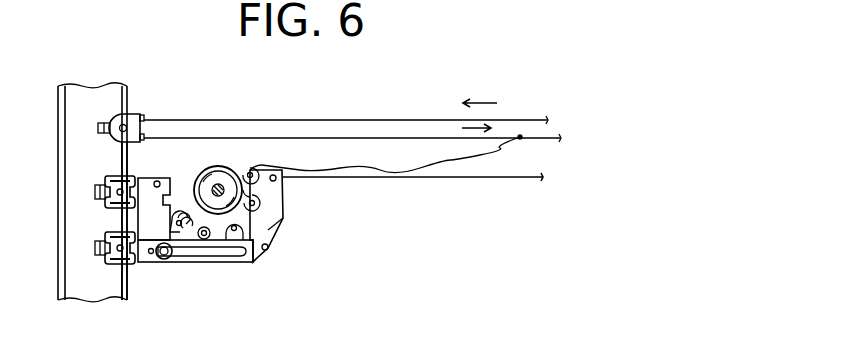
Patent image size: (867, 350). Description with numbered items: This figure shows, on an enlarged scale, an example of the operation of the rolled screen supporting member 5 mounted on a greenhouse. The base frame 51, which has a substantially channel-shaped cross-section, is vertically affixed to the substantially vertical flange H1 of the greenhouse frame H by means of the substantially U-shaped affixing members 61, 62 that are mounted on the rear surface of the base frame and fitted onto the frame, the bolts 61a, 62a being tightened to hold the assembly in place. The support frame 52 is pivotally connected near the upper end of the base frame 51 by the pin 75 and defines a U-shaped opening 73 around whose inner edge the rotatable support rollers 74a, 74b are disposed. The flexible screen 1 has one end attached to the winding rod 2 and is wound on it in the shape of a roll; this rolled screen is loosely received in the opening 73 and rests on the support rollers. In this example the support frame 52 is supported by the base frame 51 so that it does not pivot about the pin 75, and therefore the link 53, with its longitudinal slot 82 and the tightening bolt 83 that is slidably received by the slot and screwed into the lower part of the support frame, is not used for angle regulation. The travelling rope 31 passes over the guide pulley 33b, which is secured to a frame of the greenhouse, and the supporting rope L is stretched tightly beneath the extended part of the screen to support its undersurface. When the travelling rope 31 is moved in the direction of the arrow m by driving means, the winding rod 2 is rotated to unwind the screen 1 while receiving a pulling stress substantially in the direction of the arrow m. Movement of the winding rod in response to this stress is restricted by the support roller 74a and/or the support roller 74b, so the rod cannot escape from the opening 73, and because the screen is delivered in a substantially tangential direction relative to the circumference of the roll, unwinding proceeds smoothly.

The flexible screen 1 is at (395, 171).
The winding rod 2 is at (219, 184).
The rolled screen supporting member 5 is at (273, 272).
The travelling rope 31 is at (390, 119).
The guide pulley 33b is at (132, 118).
The base frame 51 is at (150, 178).
The support frame 52 is at (283, 212).
The link 53 is at (240, 262).
The affixing member 61 is at (113, 175).
The bolt 61a is at (95, 192).
The affixing member 62 is at (105, 265).
The bolt 62a is at (95, 247).
The U-shaped opening 73 is at (186, 189).
The support roller 74a is at (258, 172).
The support roller 74b is at (275, 224).
The pin 75 is at (160, 182).
The slot 82 is at (212, 262).
The tightening bolt 83 is at (165, 260).
The frame H is at (108, 288).
The vertical flange H1 is at (128, 280).
The supporting rope L is at (505, 178).
The arrow m is at (468, 119).